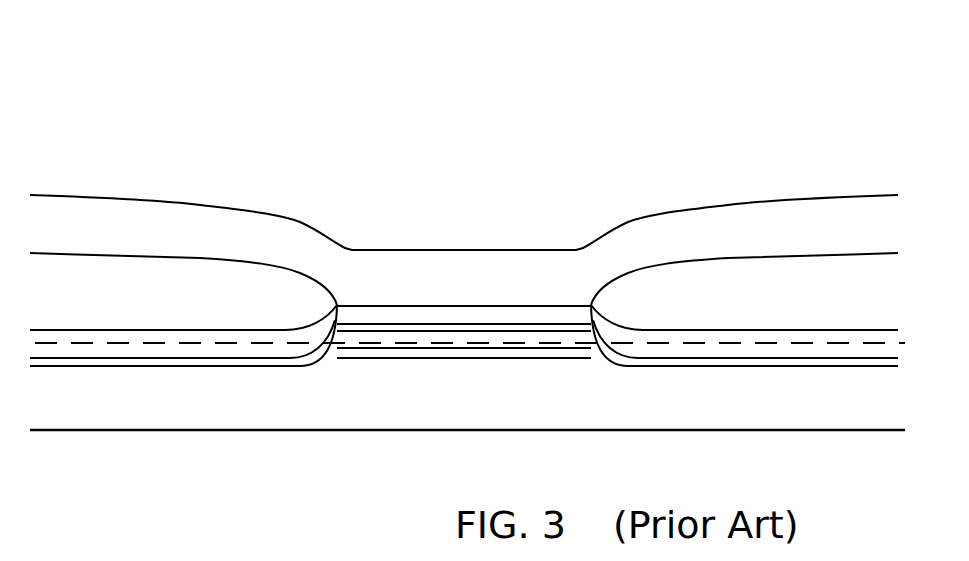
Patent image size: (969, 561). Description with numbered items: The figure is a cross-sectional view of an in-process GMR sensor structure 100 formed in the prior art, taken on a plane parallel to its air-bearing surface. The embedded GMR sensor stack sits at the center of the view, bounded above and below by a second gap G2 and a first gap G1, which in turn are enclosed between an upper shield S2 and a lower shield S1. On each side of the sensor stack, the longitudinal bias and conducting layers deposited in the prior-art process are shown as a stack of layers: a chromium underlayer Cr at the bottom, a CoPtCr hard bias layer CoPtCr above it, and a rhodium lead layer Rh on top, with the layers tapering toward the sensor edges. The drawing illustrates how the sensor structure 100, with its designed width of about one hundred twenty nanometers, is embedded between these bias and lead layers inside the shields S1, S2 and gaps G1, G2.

The GMR sensor structure 100 is at (297, 162).
The second shield S2 is at (464, 222).
The second gap layer G2 is at (464, 286).
The rhodium lead layer Rh is at (464, 291).
The CoPtCr hard bias layer CoPtCr is at (467, 339).
The chromium underlayer Cr is at (93, 362).
The first gap layer G1 is at (464, 380).
The first shield S1 is at (467, 446).